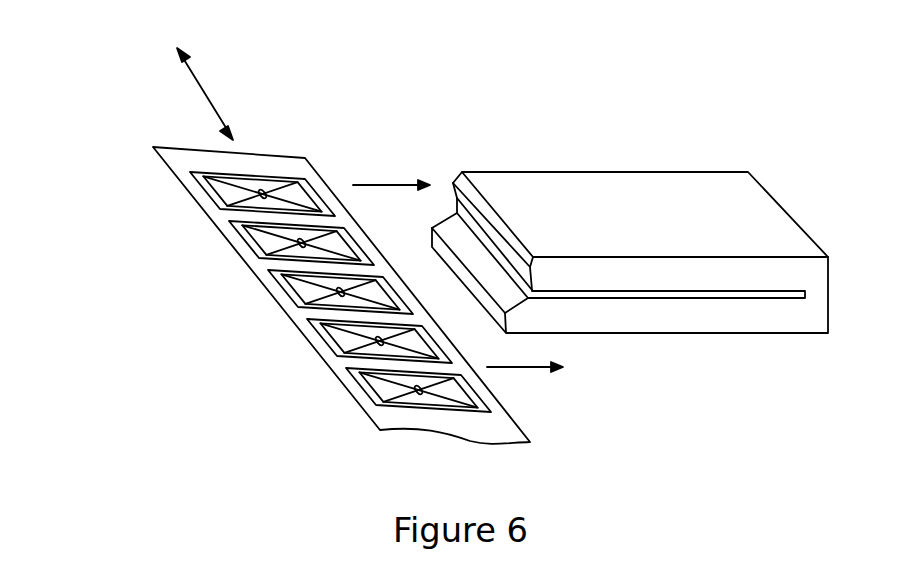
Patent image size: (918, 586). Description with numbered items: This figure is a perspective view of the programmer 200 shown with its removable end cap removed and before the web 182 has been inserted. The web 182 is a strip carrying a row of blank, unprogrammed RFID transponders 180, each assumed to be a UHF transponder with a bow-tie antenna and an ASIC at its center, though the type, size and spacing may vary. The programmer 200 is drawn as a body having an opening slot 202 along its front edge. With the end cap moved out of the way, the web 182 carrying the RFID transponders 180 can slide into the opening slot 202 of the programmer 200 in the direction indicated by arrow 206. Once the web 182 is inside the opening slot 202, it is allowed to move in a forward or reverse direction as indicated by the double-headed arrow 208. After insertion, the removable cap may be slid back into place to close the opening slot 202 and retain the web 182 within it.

The programmer 200 is at (630, 225).
The opening slot 202 is at (623, 296).
The arrow 206 is at (387, 184).
The arrow 208 is at (205, 97).
The web 182 is at (178, 164).
The RFID transponders 180 is at (250, 248).